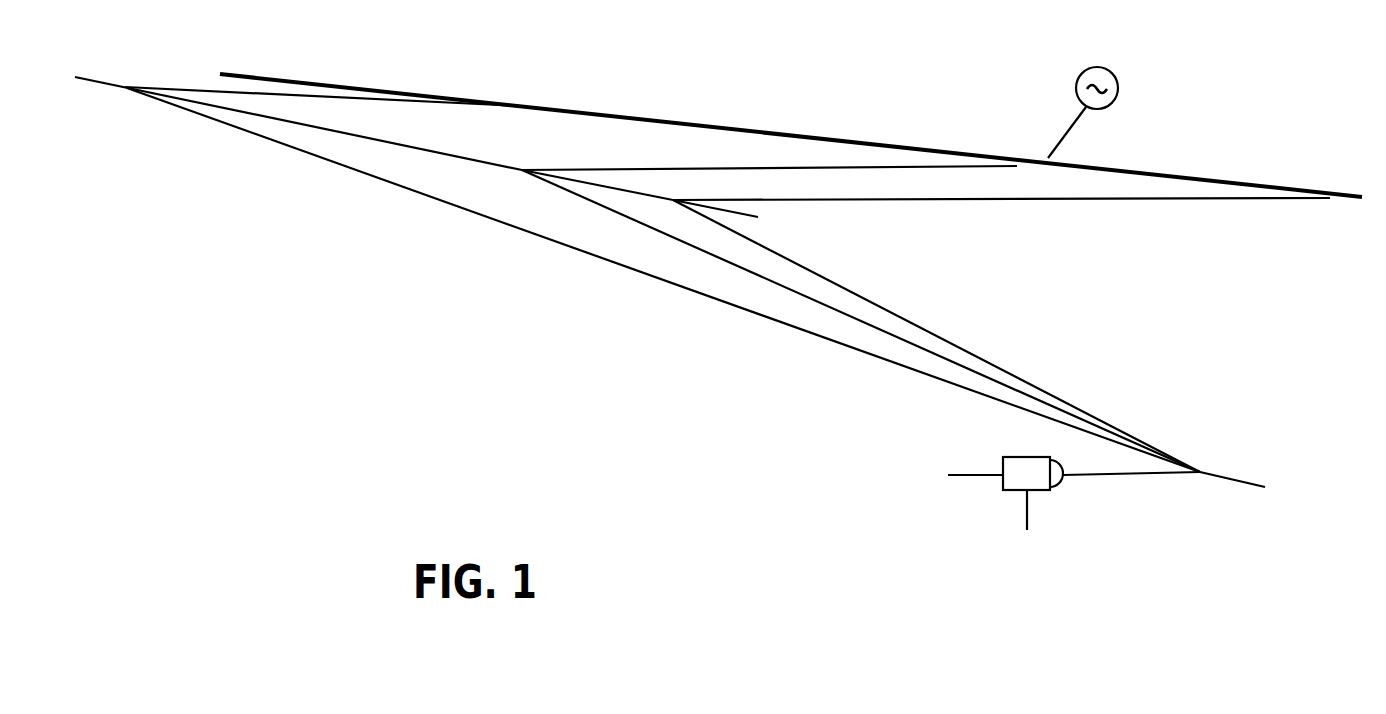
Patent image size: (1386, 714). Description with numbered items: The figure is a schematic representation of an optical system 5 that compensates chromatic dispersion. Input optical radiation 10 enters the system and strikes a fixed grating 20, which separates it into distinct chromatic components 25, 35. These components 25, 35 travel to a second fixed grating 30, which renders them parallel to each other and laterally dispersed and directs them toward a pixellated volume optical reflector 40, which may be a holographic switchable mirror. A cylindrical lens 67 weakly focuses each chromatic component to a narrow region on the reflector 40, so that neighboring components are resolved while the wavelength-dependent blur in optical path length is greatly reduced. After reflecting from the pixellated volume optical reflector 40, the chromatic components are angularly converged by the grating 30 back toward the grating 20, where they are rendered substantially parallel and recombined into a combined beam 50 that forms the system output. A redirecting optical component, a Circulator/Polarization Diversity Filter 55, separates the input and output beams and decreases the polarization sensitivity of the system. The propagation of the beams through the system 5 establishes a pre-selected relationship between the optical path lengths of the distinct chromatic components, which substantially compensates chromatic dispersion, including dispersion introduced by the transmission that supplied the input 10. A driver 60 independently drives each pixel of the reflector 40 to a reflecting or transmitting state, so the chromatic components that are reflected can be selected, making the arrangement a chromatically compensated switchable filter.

The optical system 5 is at (322, 225).
The input optical radiation 10 is at (982, 477).
The fixed grating 20 is at (1240, 458).
The distinct chromatic component 25 is at (690, 292).
The fixed grating 30 is at (323, 130).
The distinct chromatic component 35 is at (927, 328).
The pixellated volume optical reflector 40 is at (893, 127).
The combined beam 50 is at (1059, 508).
The Circulator/Polarization Diversity Filter 55 is at (1012, 493).
The driver 60 is at (1116, 78).
The cylindrical lens 67 is at (1060, 478).